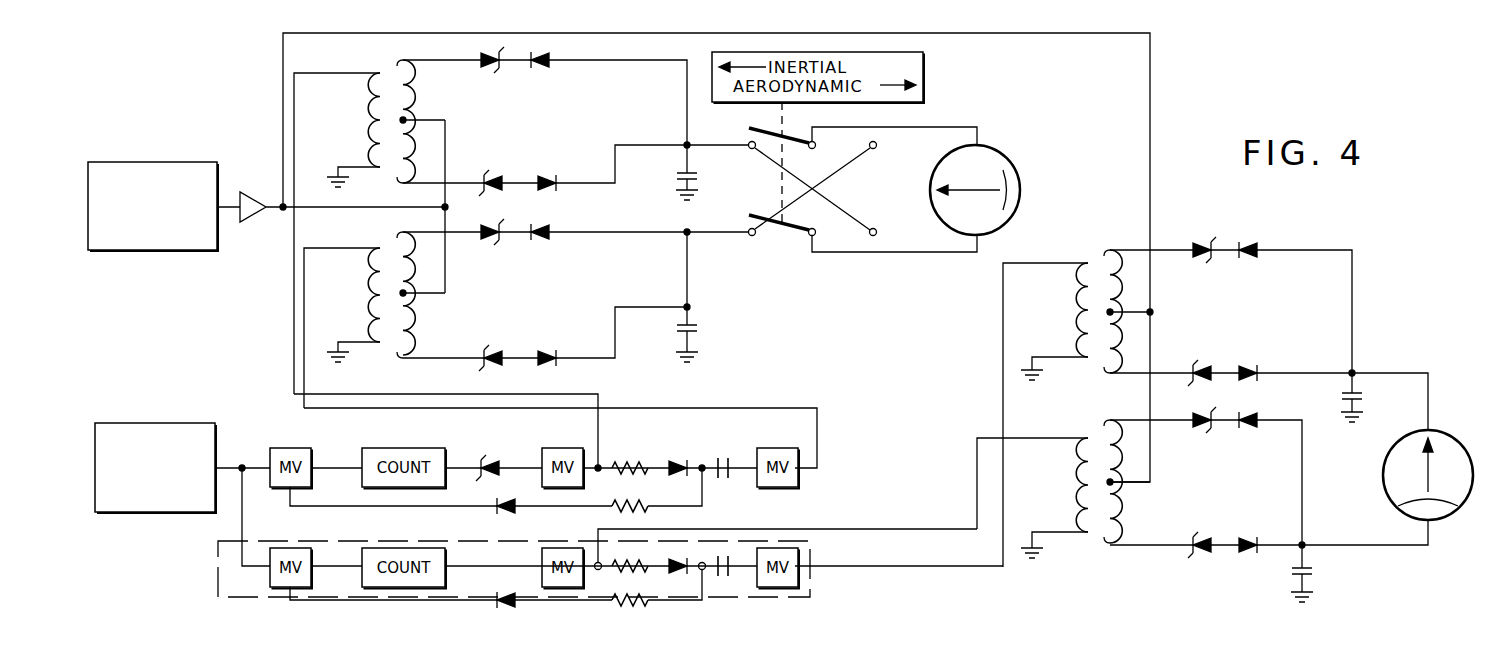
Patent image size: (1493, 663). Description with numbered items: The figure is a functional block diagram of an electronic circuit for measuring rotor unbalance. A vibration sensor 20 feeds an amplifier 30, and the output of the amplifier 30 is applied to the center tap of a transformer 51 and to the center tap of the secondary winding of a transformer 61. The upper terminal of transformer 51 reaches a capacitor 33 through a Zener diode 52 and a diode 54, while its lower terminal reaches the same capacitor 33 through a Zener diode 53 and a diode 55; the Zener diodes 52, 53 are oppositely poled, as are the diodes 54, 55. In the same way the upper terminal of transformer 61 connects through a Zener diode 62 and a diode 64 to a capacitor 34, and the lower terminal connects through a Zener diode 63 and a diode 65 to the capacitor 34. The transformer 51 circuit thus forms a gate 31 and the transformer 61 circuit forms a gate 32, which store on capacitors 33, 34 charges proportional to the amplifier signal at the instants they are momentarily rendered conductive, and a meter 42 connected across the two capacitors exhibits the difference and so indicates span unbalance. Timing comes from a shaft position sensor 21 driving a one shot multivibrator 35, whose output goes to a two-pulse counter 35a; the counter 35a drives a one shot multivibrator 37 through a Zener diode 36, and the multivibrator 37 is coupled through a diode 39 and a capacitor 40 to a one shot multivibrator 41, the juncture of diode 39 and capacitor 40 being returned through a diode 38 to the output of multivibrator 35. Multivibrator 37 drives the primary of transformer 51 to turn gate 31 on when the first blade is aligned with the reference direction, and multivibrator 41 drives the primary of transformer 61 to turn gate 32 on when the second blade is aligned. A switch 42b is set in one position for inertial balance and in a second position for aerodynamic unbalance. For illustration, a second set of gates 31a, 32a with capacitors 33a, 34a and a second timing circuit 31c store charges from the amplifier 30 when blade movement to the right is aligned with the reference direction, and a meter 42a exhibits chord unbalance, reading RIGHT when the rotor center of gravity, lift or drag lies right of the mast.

The vibration sensor 20 is at (152, 162).
The amplifier 30 is at (263, 218).
The shaft position sensor 21 is at (155, 423).
The transformer 61 is at (388, 70).
The Zener diode 62 is at (490, 68).
The Zener diode 63 is at (497, 175).
The diode 64 is at (550, 68).
The diode 65 is at (548, 175).
The gate 32 is at (632, 110).
The capacitor 34 is at (673, 178).
The transformer 51 is at (390, 342).
The Zener diode 52 is at (490, 240).
The Zener diode 53 is at (497, 350).
The diode 54 is at (550, 240).
The diode 55 is at (548, 350).
The gate 31 is at (632, 275).
The capacitor 33 is at (698, 338).
The meter 42 is at (993, 160).
The switch 42b is at (825, 190).
The one shot multivibrator 35 is at (287, 448).
The two-pulse counter 35a is at (415, 448).
The Zener diode 36 is at (495, 458).
The one shot multivibrator 37 is at (570, 448).
The diode 38 is at (505, 512).
The diode 39 is at (678, 458).
The capacitor 40 is at (725, 455).
The one shot multivibrator 41 is at (790, 448).
The gate 32a is at (1243, 315).
The capacitor 34a is at (1340, 393).
The gate 31a is at (1243, 487).
The capacitor 33a is at (1318, 576).
The meter 42a is at (1390, 457).
The circuit 31c is at (812, 579).